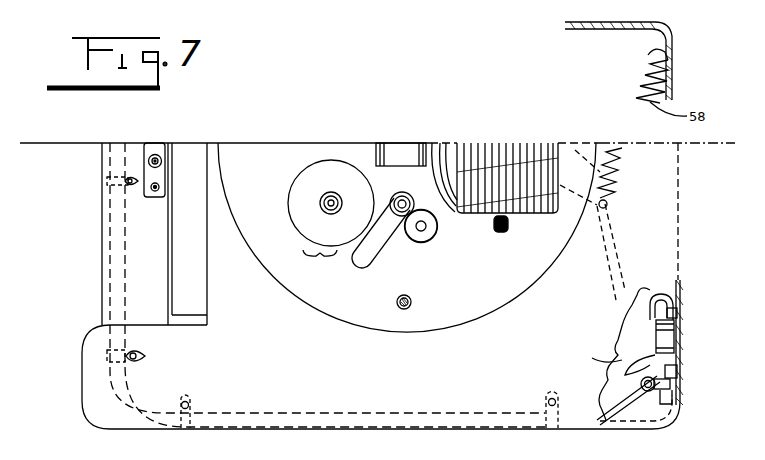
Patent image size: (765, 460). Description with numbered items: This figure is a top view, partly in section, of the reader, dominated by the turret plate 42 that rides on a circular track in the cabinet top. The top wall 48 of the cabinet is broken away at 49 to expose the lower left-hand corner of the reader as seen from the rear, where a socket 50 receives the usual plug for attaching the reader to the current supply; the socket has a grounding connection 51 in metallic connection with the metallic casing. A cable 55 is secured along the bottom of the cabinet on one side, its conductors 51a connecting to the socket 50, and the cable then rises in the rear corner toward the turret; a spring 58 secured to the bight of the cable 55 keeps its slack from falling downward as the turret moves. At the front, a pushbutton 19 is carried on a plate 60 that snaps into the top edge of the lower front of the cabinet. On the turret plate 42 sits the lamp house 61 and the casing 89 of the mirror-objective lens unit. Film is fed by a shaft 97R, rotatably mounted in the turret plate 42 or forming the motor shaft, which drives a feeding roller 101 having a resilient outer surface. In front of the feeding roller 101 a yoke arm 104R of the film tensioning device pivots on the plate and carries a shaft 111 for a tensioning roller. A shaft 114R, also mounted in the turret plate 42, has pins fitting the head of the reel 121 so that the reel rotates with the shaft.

The pushbutton 19 is at (161, 161).
The plate 60 is at (148, 197).
The turret plate 42 is at (470, 312).
The shaft 114R is at (328, 205).
The reel 121 is at (320, 262).
The yoke arm 104R is at (378, 246).
The shaft 111 is at (410, 203).
The shaft 97R is at (428, 226).
The feeding roller 101 is at (435, 240).
The casing 89 is at (400, 166).
The lamp house 61 is at (517, 213).
The spring 58 is at (620, 180).
The broken-away portion 49 is at (623, 346).
The conductors 51a is at (594, 352).
The grounding connection 51 is at (668, 293).
The socket 50 is at (667, 337).
The cable 55 is at (617, 402).
The top wall 48 is at (490, 380).